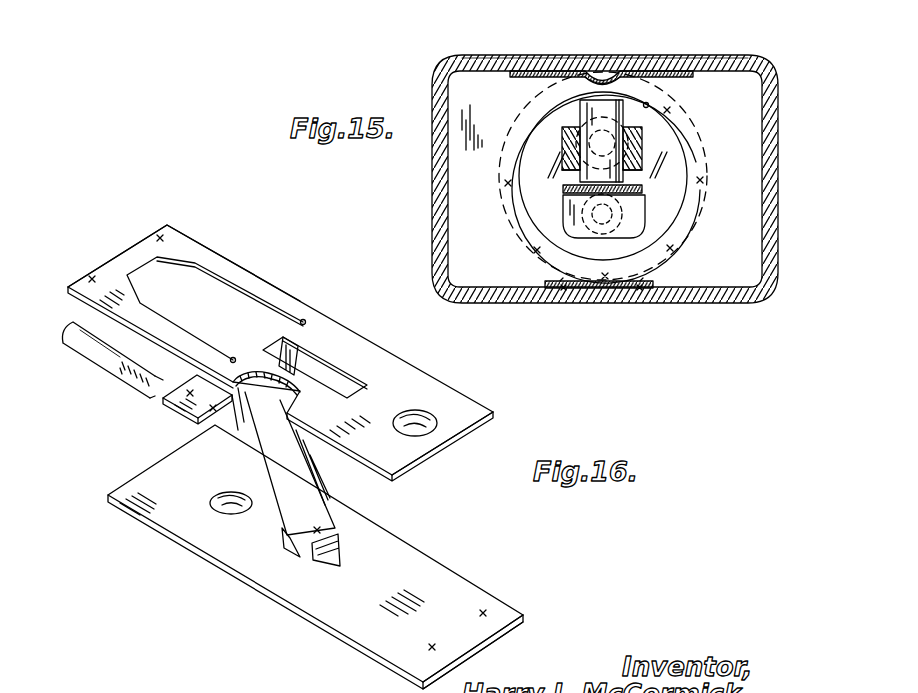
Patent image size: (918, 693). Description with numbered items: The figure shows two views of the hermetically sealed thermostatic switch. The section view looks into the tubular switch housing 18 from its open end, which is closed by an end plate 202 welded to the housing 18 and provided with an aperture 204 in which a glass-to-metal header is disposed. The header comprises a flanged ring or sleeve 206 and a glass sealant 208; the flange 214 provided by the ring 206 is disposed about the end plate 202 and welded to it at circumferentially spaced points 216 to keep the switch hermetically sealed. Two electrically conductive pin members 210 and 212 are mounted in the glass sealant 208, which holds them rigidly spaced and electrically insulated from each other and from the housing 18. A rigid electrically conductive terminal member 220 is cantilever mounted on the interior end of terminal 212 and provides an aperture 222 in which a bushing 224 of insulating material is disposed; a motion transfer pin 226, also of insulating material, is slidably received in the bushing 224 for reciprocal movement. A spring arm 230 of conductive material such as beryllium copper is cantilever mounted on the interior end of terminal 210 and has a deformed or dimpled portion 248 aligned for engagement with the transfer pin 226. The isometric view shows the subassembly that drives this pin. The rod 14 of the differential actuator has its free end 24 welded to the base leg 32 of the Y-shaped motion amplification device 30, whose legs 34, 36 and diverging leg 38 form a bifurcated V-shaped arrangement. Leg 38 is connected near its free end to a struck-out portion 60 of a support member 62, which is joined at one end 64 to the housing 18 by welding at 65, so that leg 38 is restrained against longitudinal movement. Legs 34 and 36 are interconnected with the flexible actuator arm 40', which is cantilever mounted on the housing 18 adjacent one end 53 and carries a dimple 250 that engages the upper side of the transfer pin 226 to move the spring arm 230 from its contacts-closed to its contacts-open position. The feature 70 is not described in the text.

In FIG. 16, the rod 14 is at (97, 354).
In FIG. 15, the switch housing 18 is at (503, 66).
In FIG. 16, the free end of rod 24 is at (150, 384).
In FIG. 16, the motion amplification device 30 is at (309, 272).
In FIG. 16, the base leg 32 is at (177, 413).
In FIG. 16, the leg 34 is at (231, 437).
In FIG. 16, the leg 36 is at (294, 366).
In FIG. 16, the leg 38 is at (290, 463).
In FIG. 15, the actuator arm 40' is at (605, 55).
In FIG. 16, the actuator arm 40' is at (310, 366).
In FIG. 16, the end of actuator member 53 is at (128, 261).
In FIG. 16, the struck-out portion 60 is at (282, 533).
In FIG. 16, the support member 62 is at (320, 604).
In FIG. 15, the end of support member 64 is at (653, 283).
In FIG. 16, the end of support member 64 is at (470, 637).
In FIG. 15, the weld 65 is at (640, 288).
In FIG. 16, the weld 65 is at (455, 610).
In FIG. 16, the dome 70 is at (219, 497).
In FIG. 15, the end plate 202 is at (738, 72).
In FIG. 15, the aperture 204 is at (650, 104).
In FIG. 15, the flanged ring 206 is at (678, 134).
In FIG. 15, the glass sealant 208 is at (660, 147).
In FIG. 15, the pin member 210 is at (580, 226).
In FIG. 15, the pin member 212 is at (567, 132).
In FIG. 15, the flange 214 is at (522, 228).
In FIG. 15, the circumferentially spaced weld points 216 is at (672, 111).
In FIG. 15, the rigid terminal member 220 is at (570, 170).
In FIG. 15, the aperture 222 is at (642, 178).
In FIG. 15, the bushing 224 is at (567, 149).
In FIG. 15, the motion transfer pin 226 is at (590, 118).
In FIG. 15, the spring arm 230 is at (563, 203).
In FIG. 15, the dimpled portion 248 is at (565, 188).
In FIG. 15, the dimple 250 is at (606, 73).
In FIG. 16, the dimple 250 is at (440, 429).